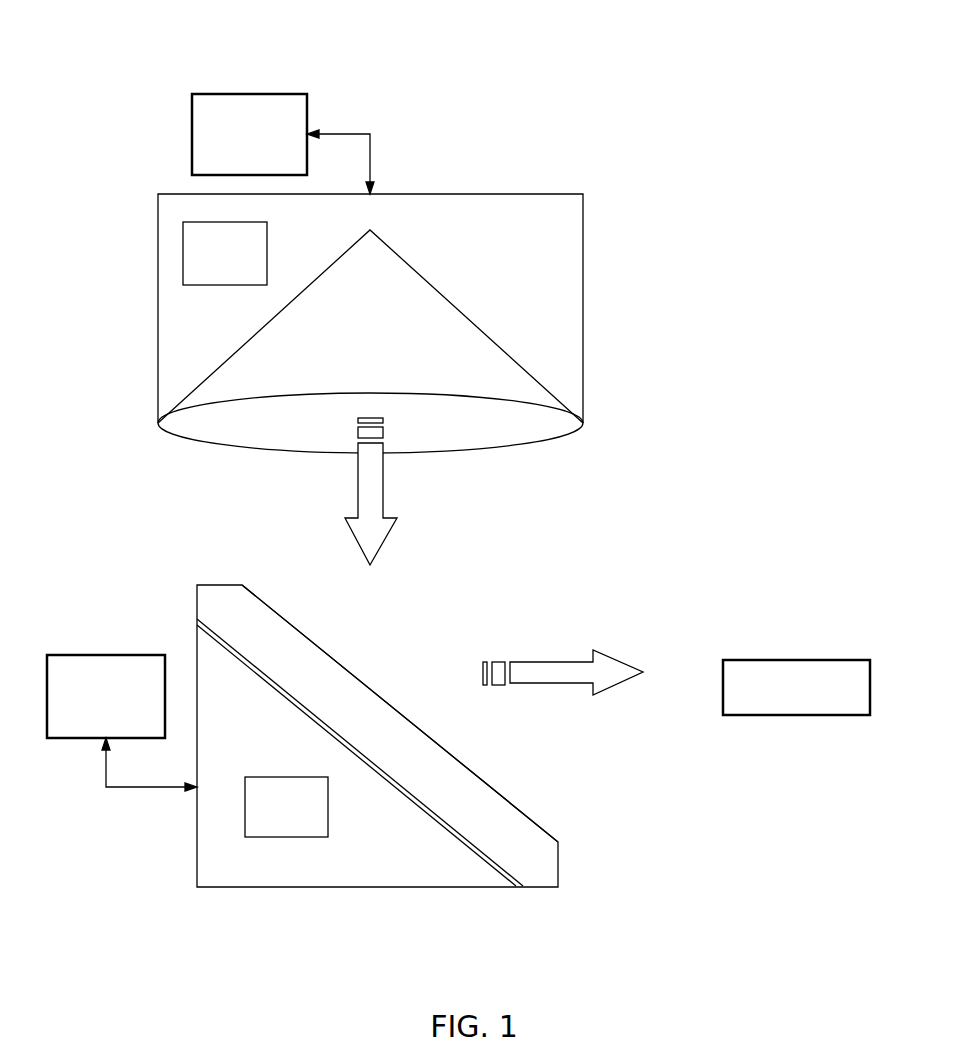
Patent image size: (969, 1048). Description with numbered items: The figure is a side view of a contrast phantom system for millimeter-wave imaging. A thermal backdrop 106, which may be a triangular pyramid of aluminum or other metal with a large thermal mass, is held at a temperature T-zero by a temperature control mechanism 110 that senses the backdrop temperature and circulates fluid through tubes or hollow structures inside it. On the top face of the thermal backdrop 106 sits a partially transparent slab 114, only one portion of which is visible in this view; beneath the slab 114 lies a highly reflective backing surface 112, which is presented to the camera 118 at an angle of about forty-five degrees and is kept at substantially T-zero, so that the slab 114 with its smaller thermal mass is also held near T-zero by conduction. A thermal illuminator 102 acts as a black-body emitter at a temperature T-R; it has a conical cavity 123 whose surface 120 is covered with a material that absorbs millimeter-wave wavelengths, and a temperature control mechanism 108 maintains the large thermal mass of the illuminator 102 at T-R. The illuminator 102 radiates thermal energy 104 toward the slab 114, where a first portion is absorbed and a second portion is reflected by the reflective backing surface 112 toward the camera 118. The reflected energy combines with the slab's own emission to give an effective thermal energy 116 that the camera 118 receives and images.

The thermal illuminator 102 is at (533, 193).
The thermal energy 104 is at (384, 503).
The thermal backdrop 106 is at (345, 888).
The temperature control mechanism 108 is at (257, 93).
The temperature control mechanism 110 is at (115, 655).
The reflective backing surface 112 is at (523, 890).
The partially transparent slab 114 is at (397, 717).
The effective thermal energy 116 is at (548, 660).
The camera 118 is at (795, 715).
The surface 120 is at (540, 430).
The conical cavity 123 is at (210, 427).